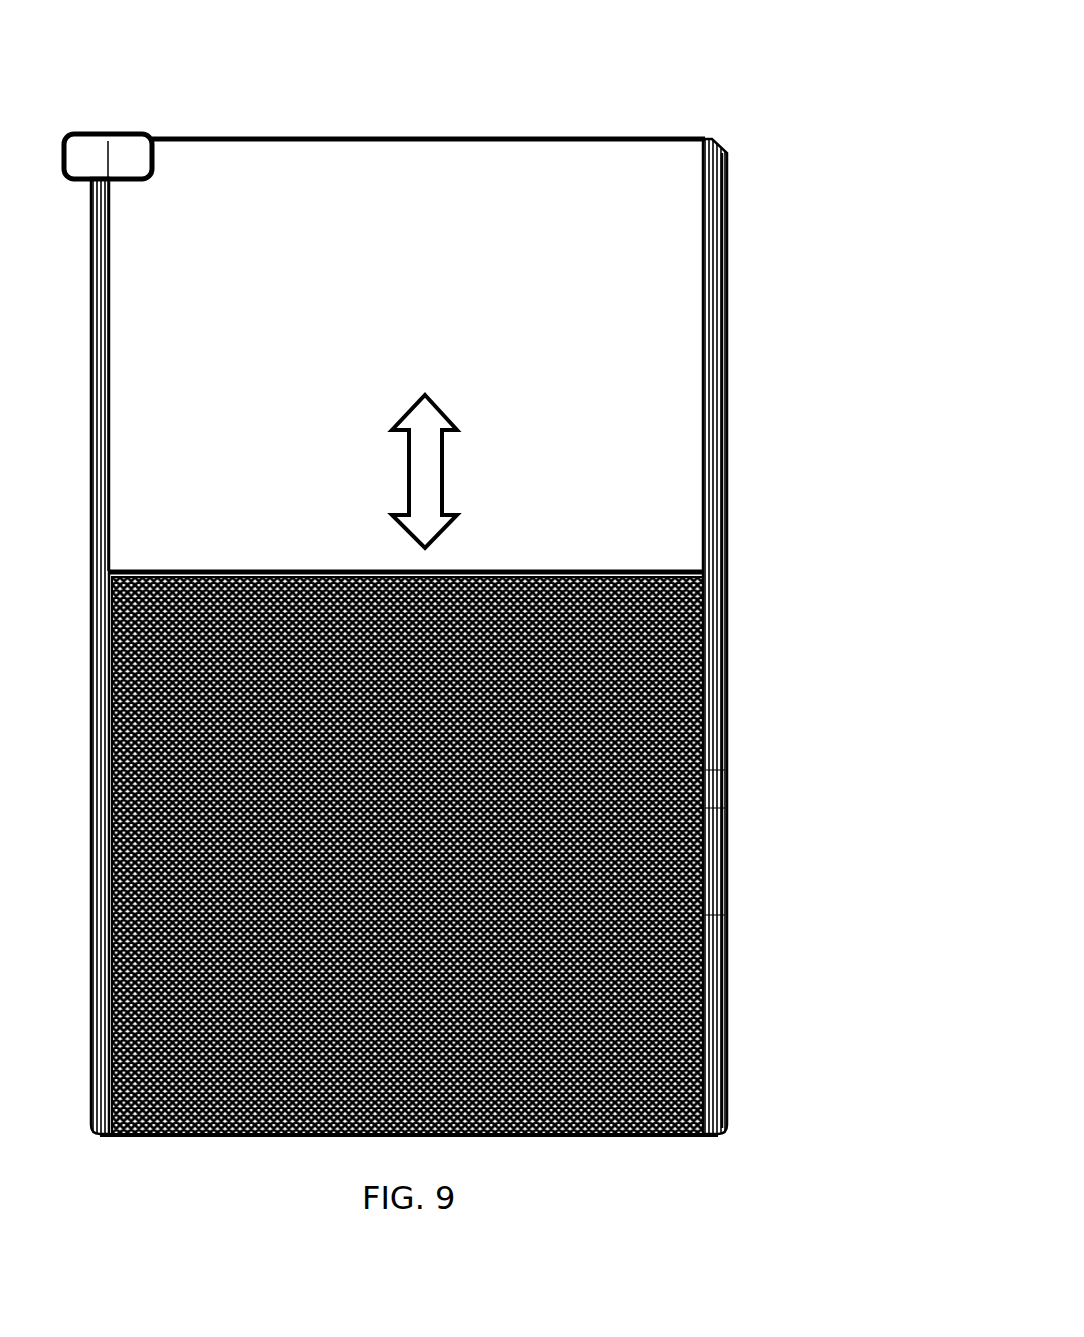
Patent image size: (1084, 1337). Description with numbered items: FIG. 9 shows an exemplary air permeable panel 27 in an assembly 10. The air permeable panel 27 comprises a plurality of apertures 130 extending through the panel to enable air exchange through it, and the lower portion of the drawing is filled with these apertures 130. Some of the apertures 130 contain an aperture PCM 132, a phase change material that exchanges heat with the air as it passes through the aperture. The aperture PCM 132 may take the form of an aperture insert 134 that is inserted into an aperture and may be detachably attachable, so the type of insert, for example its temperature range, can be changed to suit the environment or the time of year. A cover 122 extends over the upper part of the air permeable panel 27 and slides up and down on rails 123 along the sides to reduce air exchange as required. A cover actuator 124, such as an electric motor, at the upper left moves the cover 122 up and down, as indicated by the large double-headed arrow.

The filter assembly 10 is at (681, 100).
The cover 122 is at (663, 310).
The rails 123 is at (708, 420).
The cover actuator 124 is at (117, 156).
The air permeable panel 27 is at (700, 636).
The apertures 130 is at (703, 777).
The aperture PCM 132 is at (703, 812).
The aperture insert 134 is at (703, 919).